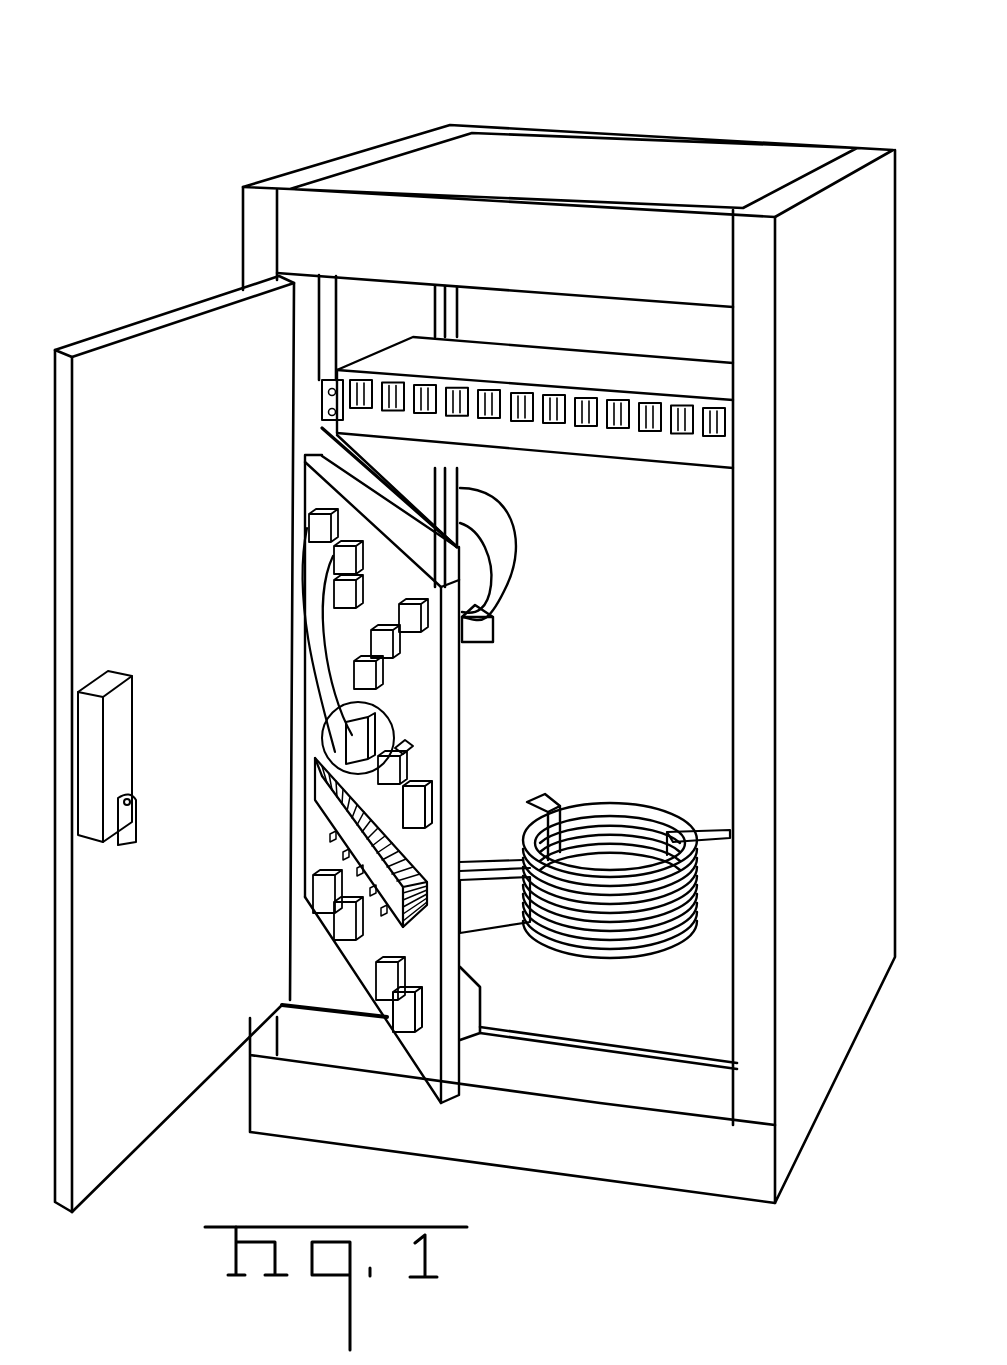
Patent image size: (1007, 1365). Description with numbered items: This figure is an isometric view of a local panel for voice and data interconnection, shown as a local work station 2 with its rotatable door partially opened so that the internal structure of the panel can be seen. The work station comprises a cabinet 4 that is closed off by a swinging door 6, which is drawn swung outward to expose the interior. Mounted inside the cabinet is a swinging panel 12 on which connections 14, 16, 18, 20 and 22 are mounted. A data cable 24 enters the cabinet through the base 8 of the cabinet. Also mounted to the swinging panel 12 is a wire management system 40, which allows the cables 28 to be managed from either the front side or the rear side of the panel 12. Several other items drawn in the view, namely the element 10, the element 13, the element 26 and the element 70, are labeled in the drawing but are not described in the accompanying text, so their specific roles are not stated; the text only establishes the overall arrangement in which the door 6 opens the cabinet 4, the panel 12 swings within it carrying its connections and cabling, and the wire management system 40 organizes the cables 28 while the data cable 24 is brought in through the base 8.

The local work station 2 is at (572, 106).
The cabinet 4 is at (893, 276).
The swinging door 6 is at (228, 340).
The base 8 is at (697, 1031).
The shelf 10 is at (640, 371).
The swinging panel 12 is at (450, 662).
The hinge strip 13 is at (427, 932).
The connection 14 is at (383, 1017).
The connection 16 is at (388, 936).
The connection 18 is at (421, 808).
The connection 20 is at (373, 769).
The connection 22 is at (481, 617).
The data cable 24 is at (700, 906).
The connectors 26 is at (652, 432).
The cables 28 is at (320, 668).
The wire management system 40 is at (477, 906).
The coil 70 is at (507, 922).